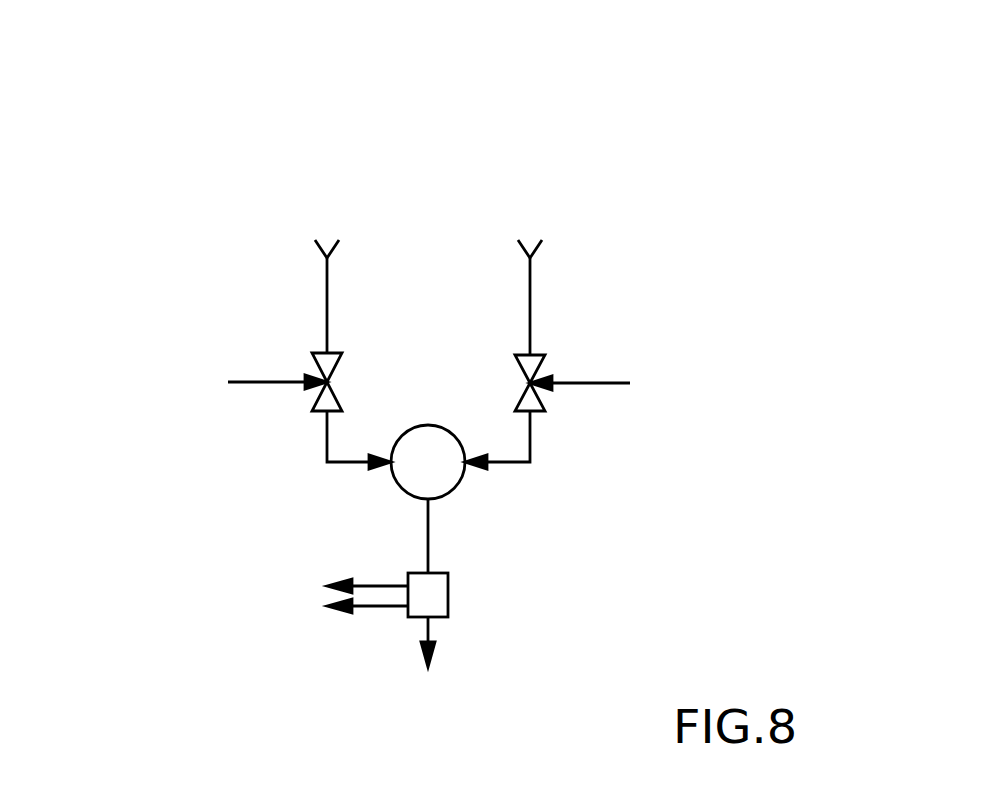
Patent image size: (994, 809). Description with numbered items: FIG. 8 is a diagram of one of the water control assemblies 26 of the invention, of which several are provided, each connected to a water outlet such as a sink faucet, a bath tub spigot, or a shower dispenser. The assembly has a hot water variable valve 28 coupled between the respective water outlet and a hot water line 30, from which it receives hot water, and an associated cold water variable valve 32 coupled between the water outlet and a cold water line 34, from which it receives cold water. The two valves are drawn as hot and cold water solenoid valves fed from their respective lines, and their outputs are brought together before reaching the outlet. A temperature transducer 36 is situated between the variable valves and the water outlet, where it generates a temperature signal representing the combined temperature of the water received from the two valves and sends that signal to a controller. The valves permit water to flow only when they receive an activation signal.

The water control assembly 26 is at (528, 170).
The hot water variable valve 28 is at (334, 352).
The hot water line 30 is at (318, 247).
The cold water variable valve 32 is at (538, 352).
The cold water line 34 is at (540, 248).
The temperature transducer 36 is at (436, 573).